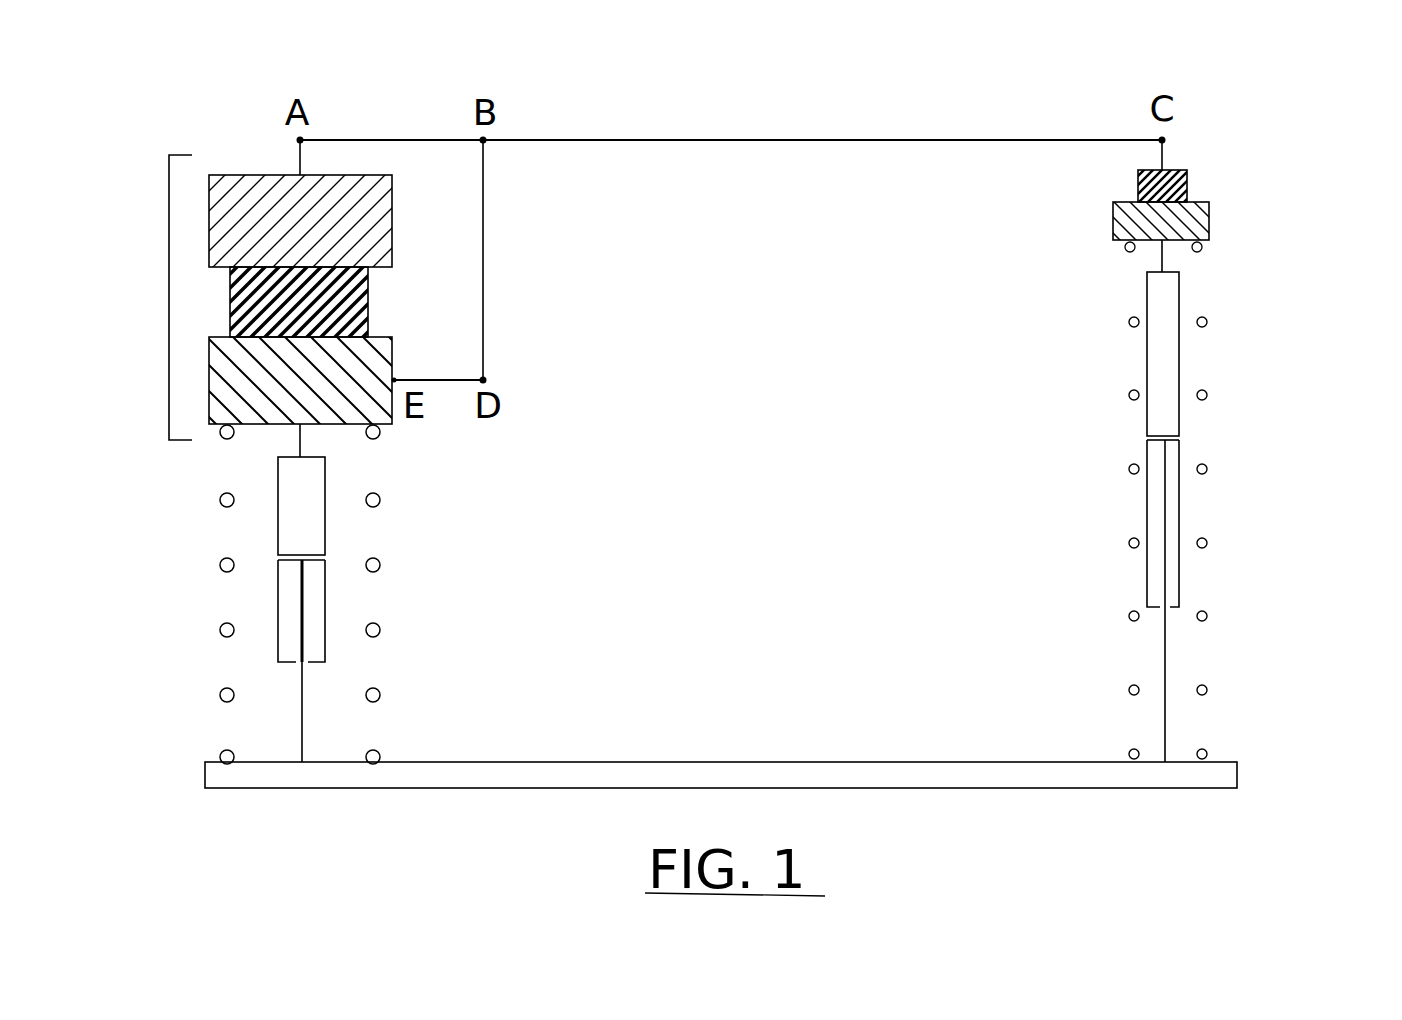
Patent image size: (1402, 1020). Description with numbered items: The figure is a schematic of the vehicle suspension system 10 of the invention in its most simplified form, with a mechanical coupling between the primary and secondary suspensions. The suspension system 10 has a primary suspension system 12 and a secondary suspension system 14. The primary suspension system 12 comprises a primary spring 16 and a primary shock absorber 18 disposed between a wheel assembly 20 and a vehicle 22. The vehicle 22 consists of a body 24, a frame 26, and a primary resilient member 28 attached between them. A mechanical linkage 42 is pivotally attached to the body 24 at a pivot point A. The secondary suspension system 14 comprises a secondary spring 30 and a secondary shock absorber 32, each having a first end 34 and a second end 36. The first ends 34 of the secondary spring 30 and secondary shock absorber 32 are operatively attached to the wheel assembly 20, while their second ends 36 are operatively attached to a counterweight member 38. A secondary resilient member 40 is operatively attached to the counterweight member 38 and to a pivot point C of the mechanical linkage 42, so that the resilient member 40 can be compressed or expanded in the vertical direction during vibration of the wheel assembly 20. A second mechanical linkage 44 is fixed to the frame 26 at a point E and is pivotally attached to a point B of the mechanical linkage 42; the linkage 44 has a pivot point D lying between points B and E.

The vehicle suspension system 10 is at (641, 103).
The primary suspension system 12 is at (184, 559).
The secondary suspension system 14 is at (1246, 419).
The primary spring 16 is at (380, 634).
The primary shock absorber 18 is at (325, 500).
The wheel assembly 20 is at (767, 762).
The vehicle 22 is at (169, 287).
The body 24 is at (392, 216).
The frame 26 is at (393, 422).
The primary resilient member 28 is at (368, 310).
The secondary spring 30 is at (1207, 540).
The secondary shock absorber 32 is at (1180, 347).
The first end 34 is at (1233, 735).
The second end 36 is at (1228, 260).
The counterweight member 38 is at (1209, 218).
The secondary resilient member 40 is at (1187, 180).
The mechanical linkage 42 is at (760, 138).
The mechanical linkage 44 is at (442, 380).